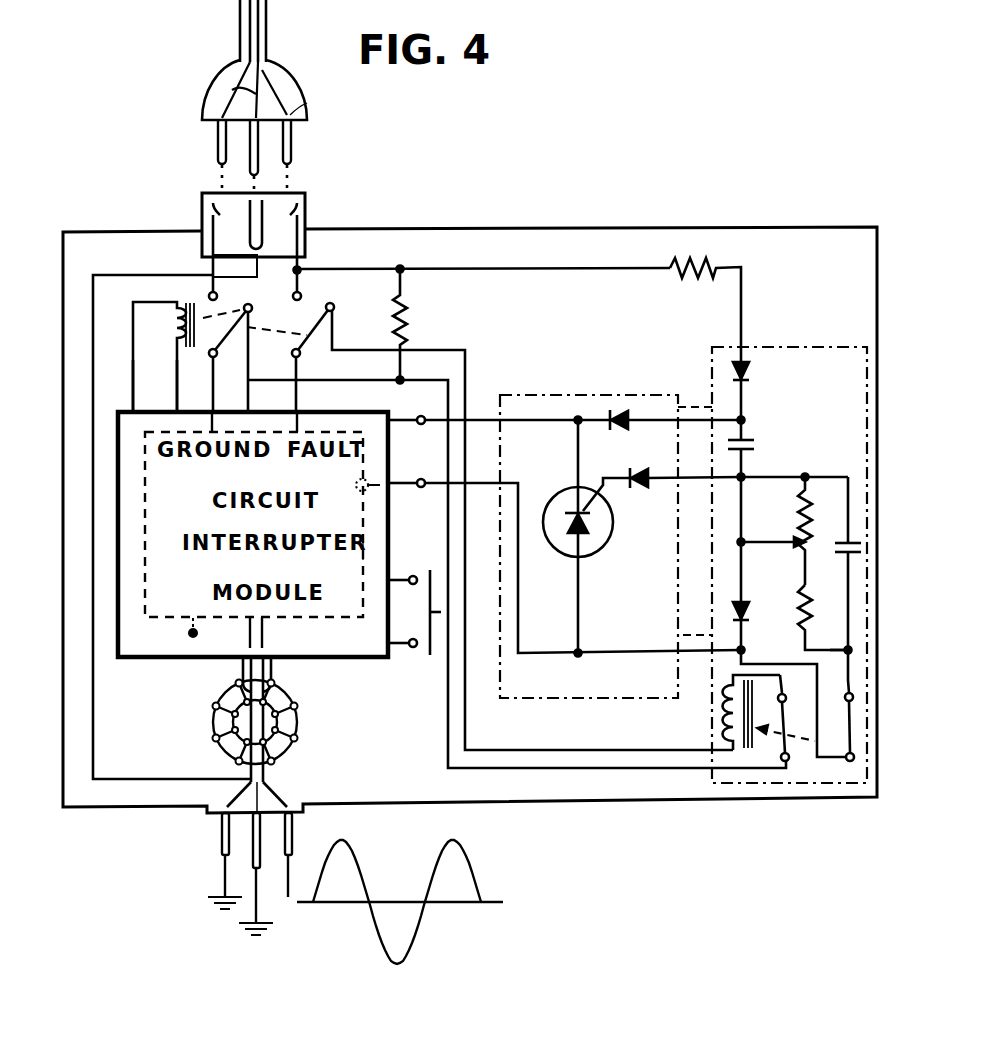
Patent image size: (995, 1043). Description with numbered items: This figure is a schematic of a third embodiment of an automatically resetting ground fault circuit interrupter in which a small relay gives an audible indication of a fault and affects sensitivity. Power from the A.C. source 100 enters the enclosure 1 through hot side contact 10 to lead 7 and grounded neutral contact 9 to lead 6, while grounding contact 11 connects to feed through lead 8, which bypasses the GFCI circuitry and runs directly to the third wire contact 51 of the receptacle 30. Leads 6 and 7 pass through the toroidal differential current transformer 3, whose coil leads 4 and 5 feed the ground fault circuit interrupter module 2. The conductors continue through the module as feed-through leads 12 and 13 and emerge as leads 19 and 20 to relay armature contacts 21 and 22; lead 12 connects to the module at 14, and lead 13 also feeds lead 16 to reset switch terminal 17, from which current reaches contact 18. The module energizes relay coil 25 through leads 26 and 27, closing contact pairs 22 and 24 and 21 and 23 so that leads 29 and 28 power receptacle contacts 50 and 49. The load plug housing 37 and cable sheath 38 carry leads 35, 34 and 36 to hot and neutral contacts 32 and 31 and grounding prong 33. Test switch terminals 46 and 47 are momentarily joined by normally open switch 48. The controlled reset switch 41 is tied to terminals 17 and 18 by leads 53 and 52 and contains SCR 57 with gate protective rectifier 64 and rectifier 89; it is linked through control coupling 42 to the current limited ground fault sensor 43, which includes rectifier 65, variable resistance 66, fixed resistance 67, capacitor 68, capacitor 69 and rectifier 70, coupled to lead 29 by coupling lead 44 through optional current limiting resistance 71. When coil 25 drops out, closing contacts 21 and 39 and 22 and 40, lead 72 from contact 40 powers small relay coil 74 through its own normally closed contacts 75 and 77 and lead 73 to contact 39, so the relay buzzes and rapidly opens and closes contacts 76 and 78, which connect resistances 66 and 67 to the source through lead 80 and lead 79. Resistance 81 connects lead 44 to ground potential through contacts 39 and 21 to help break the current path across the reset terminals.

The enclosure 1 is at (63, 410).
The ground fault circuit interrupter module 2 is at (176, 660).
The toroidal differential current transformer 3 is at (214, 718).
The lead 4 is at (240, 674).
The lead 5 is at (274, 668).
The lead 6 is at (234, 790).
The lead 7 is at (280, 790).
The feed through lead 8 is at (165, 276).
The grounded neutral contact 9 is at (214, 836).
The hot side contact 10 is at (294, 836).
The grounding contact 11 is at (246, 866).
The feed-through lead 12 is at (144, 554).
The feed-through lead 13 is at (362, 550).
The module connection 14 is at (192, 634).
The lead 16 is at (354, 486).
The reset switch terminal 17 is at (426, 470).
The contact 18 is at (426, 408).
The lead 19 is at (210, 385).
The lead 20 is at (294, 388).
The relay armature contact 21 is at (230, 314).
The relay armature contact 22 is at (332, 308).
The contact 23 is at (208, 296).
The contact 24 is at (294, 290).
The relay coil 25 is at (172, 314).
The lead 26 is at (132, 382).
The lead 27 is at (174, 382).
The lead 28 is at (205, 252).
The lead 29 is at (302, 230).
The receptacle 30 is at (235, 267).
The neutral contact 31 is at (212, 149).
The hot contact 32 is at (290, 140).
The grounding prong 33 is at (248, 160).
The lead 34 is at (208, 98).
The lead 35 is at (300, 103).
The lead 36 is at (224, 76).
The plug housing 37 is at (282, 68).
The cable sheath 38 is at (268, 10).
The GFCI relay contact 39 is at (276, 305).
The GFCI relay contact 40 is at (334, 310).
The controlled reset switch 41 is at (612, 396).
The control coupling 42 is at (696, 406).
The current limited ground fault sensor 43 is at (828, 346).
The coupling lead 44 is at (573, 262).
The test switch terminal 46 is at (418, 662).
The test switch terminal 47 is at (412, 576).
The normally open switch 48 is at (414, 595).
The receptacle contact 49 is at (212, 216).
The receptacle contact 50 is at (299, 205).
The third wire contact 51 is at (250, 216).
The lead 52 is at (478, 420).
The lead 53 is at (496, 483).
The SCR 57 is at (566, 486).
The rectifier 64 is at (640, 488).
The rectifier 65 is at (766, 610).
The variable resistance 66 is at (798, 520).
The fixed resistance 67 is at (808, 594).
The capacitor 68 is at (834, 543).
The capacitor 69 is at (754, 440).
The rectifier 70 is at (778, 366).
The current limiting resistance 71 is at (696, 274).
The lead 72 is at (384, 350).
The lead 73 is at (364, 380).
The coil 74 is at (724, 726).
The small relay contact 75 is at (782, 720).
The small relay contact 76 is at (832, 725).
The small relay contact 77 is at (800, 695).
The small relay contact 78 is at (848, 694).
The lead 79 is at (792, 666).
The lead 80 is at (846, 654).
The resistance 81 is at (426, 300).
The rectifier 89 is at (626, 428).
The A.C. source 100 is at (348, 903).